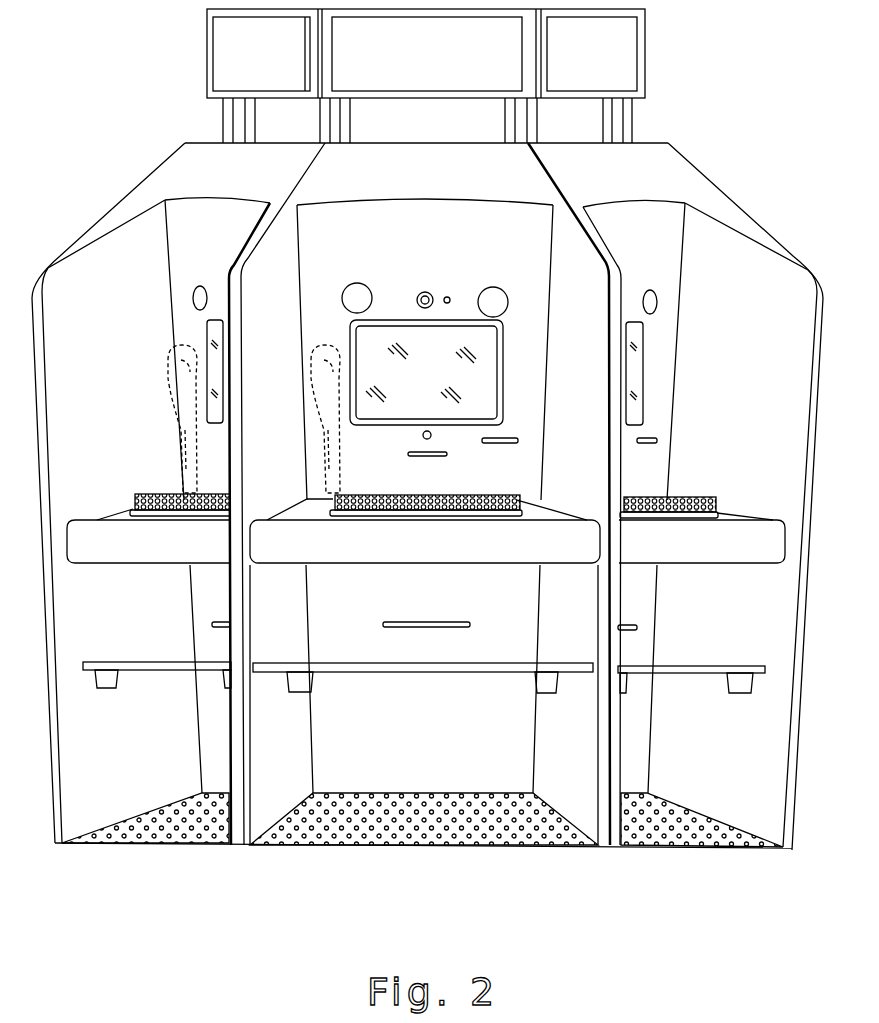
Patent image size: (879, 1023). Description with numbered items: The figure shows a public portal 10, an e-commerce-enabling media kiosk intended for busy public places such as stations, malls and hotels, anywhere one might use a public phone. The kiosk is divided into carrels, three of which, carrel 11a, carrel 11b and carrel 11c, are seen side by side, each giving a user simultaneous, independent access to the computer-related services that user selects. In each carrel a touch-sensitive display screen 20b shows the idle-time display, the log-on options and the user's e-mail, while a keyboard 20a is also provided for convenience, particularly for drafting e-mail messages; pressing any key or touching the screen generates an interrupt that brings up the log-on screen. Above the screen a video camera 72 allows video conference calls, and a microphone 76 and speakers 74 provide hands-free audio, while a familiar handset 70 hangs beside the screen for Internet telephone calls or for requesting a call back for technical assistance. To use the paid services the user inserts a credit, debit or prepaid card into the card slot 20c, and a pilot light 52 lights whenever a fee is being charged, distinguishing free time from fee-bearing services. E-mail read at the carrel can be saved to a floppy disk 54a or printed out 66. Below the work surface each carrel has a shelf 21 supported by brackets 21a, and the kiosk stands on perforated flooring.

The public portal 10 is at (167, 182).
The carrel 11a is at (224, 229).
The carrel 11b is at (446, 231).
The carrel 11c is at (664, 229).
The speakers 74 is at (200, 287).
The video camera 72 is at (422, 293).
The microphone 76 is at (452, 297).
The handset 70 is at (170, 363).
The keyboard 20a is at (157, 500).
The display screen 20b is at (437, 418).
The card slot 20c is at (423, 457).
The pilot light 52 is at (422, 435).
The floppy disk 54a is at (490, 447).
The printout 66 is at (217, 620).
The shelf 21 is at (163, 660).
The shelf bracket 21a is at (107, 690).